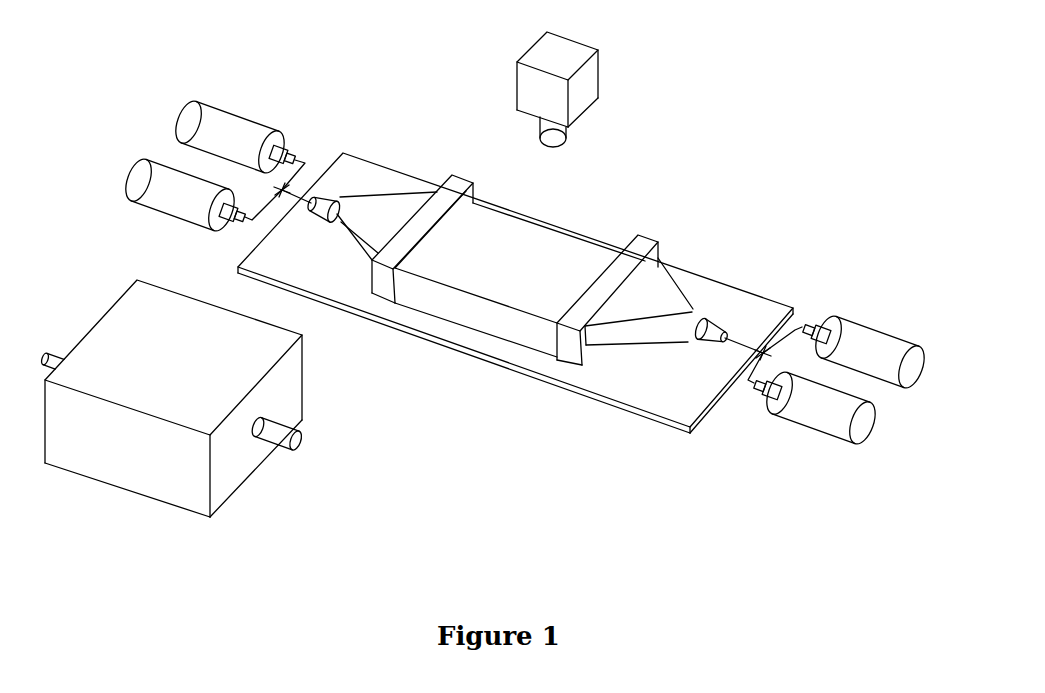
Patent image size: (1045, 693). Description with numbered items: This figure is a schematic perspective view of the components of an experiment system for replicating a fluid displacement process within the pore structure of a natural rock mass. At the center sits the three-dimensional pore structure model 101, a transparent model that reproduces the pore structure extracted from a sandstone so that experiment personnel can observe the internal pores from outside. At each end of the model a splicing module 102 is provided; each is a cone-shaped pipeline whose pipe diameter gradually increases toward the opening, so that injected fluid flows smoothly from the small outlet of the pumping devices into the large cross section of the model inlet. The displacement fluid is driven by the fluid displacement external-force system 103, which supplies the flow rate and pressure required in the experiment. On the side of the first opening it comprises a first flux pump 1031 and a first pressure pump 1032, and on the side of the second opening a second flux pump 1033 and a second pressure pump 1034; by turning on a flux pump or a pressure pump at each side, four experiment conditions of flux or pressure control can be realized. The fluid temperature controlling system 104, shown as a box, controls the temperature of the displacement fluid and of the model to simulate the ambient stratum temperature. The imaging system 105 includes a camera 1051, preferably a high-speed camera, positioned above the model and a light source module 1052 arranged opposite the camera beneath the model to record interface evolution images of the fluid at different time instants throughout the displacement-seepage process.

The three-dimensional pore structure model 101 is at (517, 262).
The splicing module 102 is at (370, 218).
The fluid displacement external-force system 103 is at (183, 23).
The first flux pump 1031 is at (153, 197).
The first pressure pump 1032 is at (220, 123).
The second flux pump 1033 is at (828, 423).
The second pressure pump 1034 is at (877, 343).
The fluid temperature controlling system 104 is at (280, 409).
The imaging system 105 is at (453, 23).
The camera 1051 is at (525, 77).
The light source module 1052 is at (364, 175).